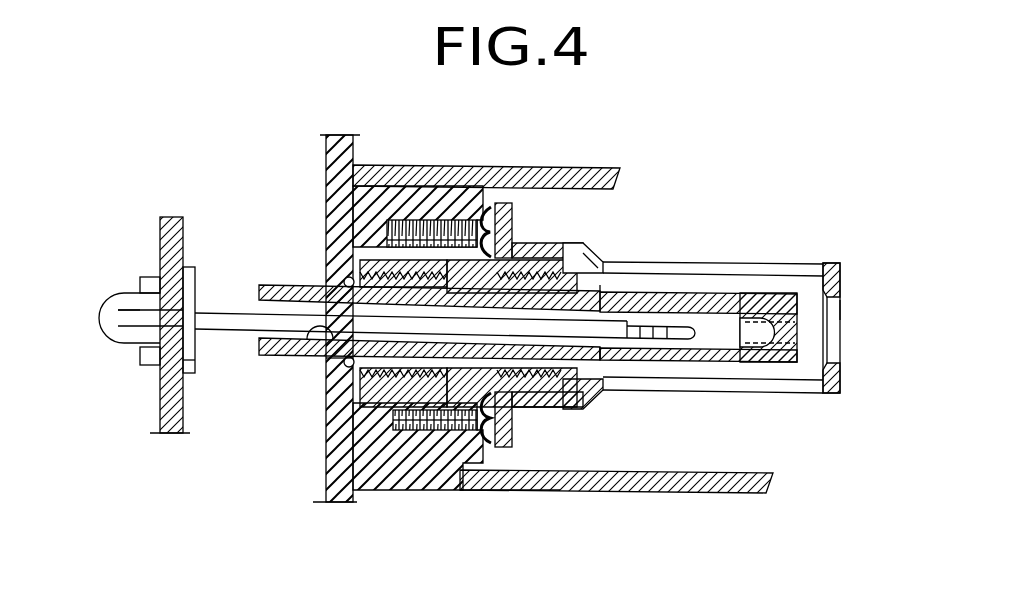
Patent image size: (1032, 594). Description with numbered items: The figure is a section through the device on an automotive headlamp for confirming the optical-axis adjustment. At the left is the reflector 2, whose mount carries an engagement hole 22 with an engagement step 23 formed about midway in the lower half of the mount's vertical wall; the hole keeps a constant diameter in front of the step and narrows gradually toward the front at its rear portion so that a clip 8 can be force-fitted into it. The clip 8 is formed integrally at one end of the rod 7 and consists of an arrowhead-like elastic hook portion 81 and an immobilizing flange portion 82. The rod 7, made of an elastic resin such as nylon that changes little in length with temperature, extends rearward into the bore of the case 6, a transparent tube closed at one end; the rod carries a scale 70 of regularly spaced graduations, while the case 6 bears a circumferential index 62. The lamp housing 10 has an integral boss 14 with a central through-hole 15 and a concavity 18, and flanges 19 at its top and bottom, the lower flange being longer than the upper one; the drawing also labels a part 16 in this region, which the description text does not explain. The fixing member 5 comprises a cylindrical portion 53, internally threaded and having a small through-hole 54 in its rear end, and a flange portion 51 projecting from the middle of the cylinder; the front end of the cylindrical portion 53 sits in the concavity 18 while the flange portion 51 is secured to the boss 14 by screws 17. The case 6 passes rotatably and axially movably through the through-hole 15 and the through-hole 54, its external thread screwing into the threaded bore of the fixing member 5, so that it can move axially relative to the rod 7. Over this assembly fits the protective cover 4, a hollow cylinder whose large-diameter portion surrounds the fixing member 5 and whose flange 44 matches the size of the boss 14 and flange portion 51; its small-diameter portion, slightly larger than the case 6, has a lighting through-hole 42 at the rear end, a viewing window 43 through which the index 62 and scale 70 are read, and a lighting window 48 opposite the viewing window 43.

The reflector 2 is at (172, 217).
The protective cover 4 is at (590, 240).
The fixing member 5 is at (563, 200).
The case 6 is at (708, 293).
The rod 7 is at (608, 320).
The clip 8 is at (115, 290).
The lamp housing 10 is at (327, 168).
The boss 14 is at (424, 198).
The through-hole 15 is at (295, 347).
The nut 16 is at (338, 278).
The screws 17 is at (417, 432).
The concavity 18 is at (358, 378).
The flanges 19 is at (653, 492).
The engagement hole 22 is at (123, 302).
The engagement step 23 is at (197, 364).
The lighting through-hole 42 is at (843, 307).
The viewing window 43 is at (606, 386).
The flange 44 is at (497, 207).
The lighting window 48 is at (806, 395).
The flange portion 51 is at (480, 200).
The cylindrical portion 53 is at (377, 433).
The through-hole 54 is at (570, 420).
The index 62 is at (660, 362).
The scale 70 is at (694, 340).
The elastic hook portion 81 is at (126, 292).
The immobilizing flange portion 82 is at (192, 267).